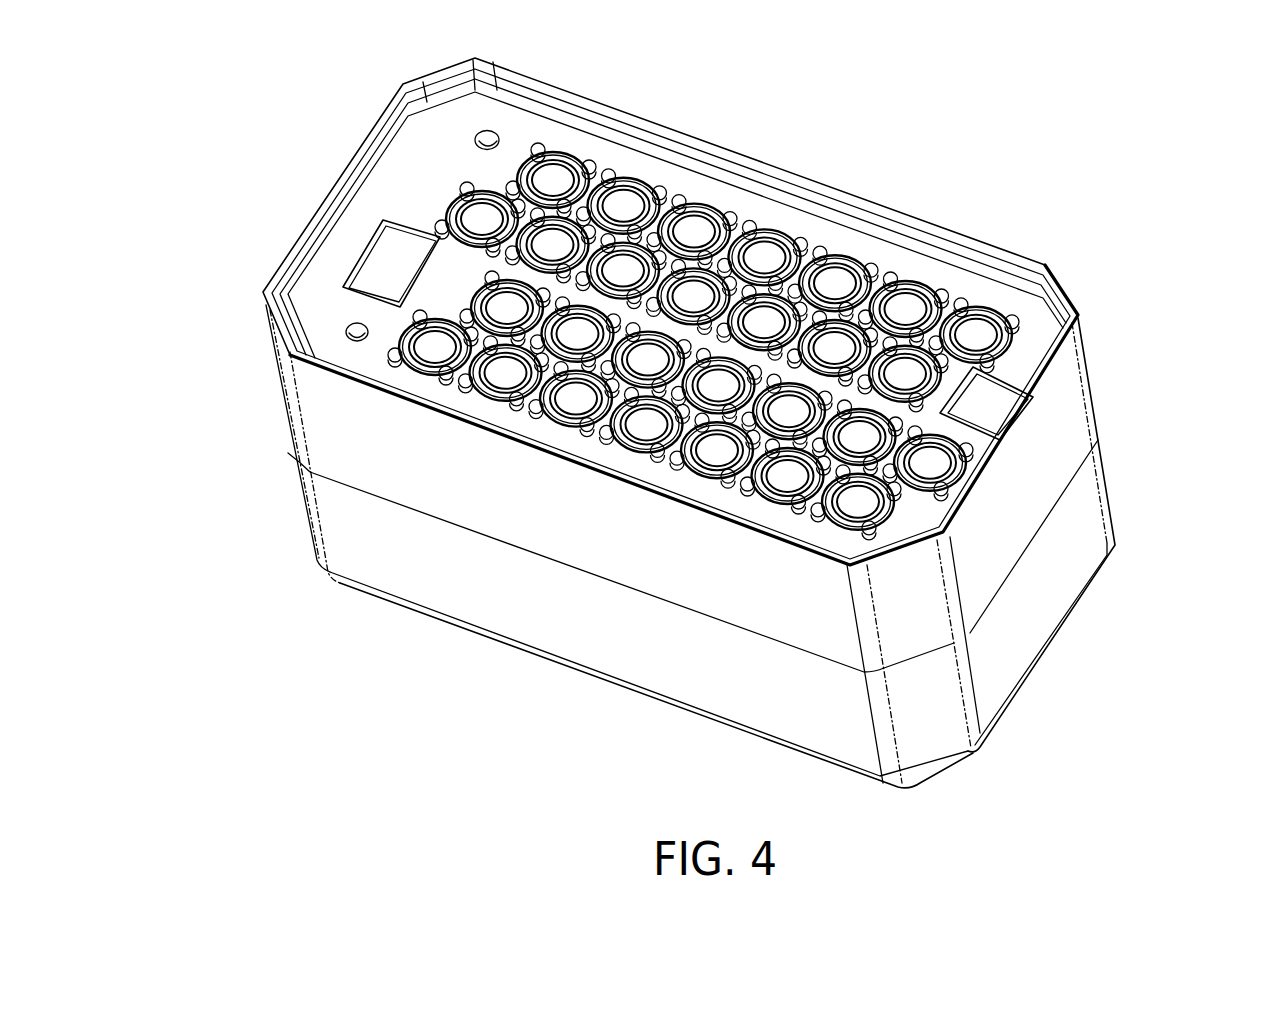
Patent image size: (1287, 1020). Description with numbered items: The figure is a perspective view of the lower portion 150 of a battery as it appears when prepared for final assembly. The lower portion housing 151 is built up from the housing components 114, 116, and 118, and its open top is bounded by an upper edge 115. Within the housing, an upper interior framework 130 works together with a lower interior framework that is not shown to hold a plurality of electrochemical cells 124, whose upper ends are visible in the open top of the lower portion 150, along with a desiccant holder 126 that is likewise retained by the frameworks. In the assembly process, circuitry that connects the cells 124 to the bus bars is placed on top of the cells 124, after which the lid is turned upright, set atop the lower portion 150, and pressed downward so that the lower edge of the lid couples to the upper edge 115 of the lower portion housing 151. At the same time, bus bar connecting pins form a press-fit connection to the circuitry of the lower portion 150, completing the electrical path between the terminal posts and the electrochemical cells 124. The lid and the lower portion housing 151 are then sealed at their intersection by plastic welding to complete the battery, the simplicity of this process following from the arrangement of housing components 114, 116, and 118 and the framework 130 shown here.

The lower portion 150 is at (1080, 145).
The upper edge 115 is at (405, 86).
The electrochemical cells 124 is at (764, 257).
The upper interior framework 130 is at (370, 348).
The desiccant holder 126 is at (993, 412).
The housing component 116 is at (370, 523).
The housing component 118 is at (463, 626).
The lower portion housing 151 is at (1066, 646).
The housing component 114 is at (1073, 373).